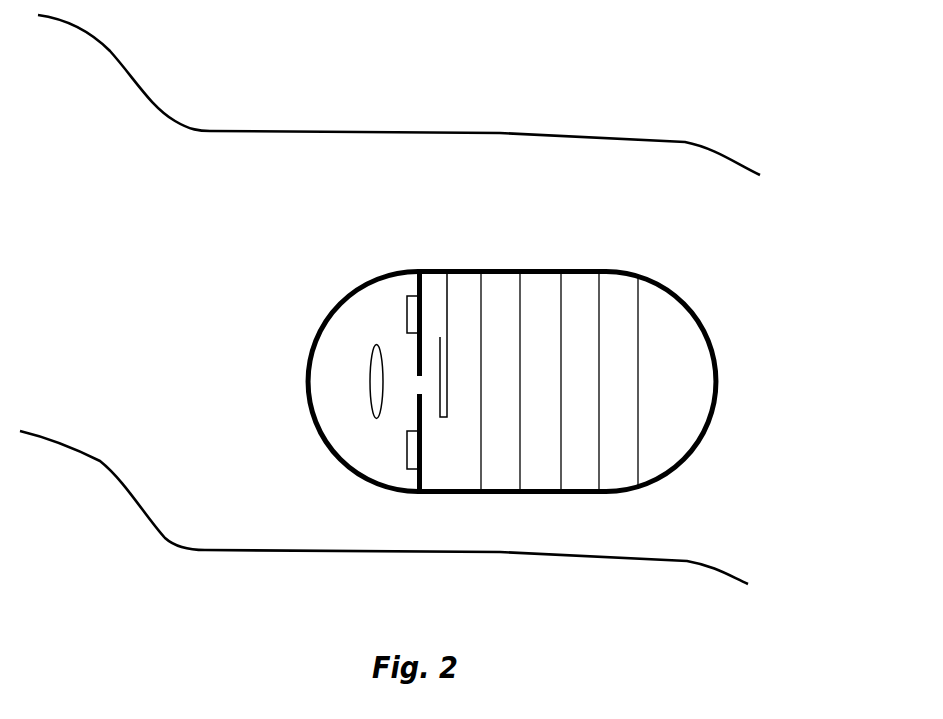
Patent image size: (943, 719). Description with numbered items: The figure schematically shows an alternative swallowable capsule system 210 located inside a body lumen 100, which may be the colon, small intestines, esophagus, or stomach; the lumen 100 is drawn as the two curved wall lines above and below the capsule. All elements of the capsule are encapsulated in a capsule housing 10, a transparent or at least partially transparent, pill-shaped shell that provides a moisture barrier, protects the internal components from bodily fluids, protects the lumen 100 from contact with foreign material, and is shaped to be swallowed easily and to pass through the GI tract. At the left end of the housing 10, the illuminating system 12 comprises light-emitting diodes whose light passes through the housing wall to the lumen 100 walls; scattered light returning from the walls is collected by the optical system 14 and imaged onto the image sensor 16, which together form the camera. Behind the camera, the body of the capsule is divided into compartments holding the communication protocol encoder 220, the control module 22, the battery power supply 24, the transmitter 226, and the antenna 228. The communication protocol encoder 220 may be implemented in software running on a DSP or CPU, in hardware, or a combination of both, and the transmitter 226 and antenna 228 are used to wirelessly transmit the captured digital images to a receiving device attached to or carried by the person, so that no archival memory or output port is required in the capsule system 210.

The capsule housing 10 is at (327, 318).
The illuminating system 12 is at (407, 309).
The optical system 14 is at (370, 381).
The image sensor 16 is at (440, 336).
The control module 22 is at (507, 290).
The battery power supply 24 is at (550, 290).
The body lumen 100 is at (170, 539).
The swallowable capsule system 210 is at (772, 374).
The communication protocol encoder 220 is at (462, 292).
The transmitter 226 is at (597, 290).
The antenna 228 is at (619, 295).